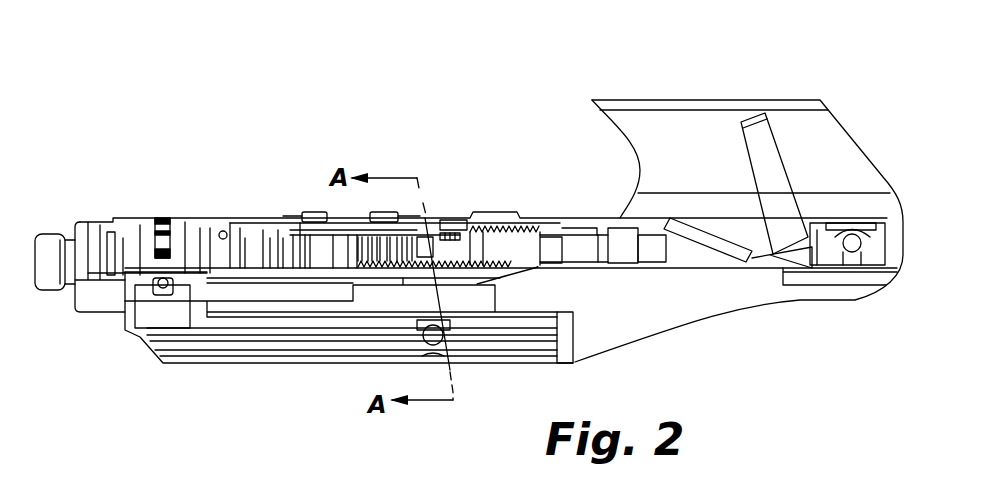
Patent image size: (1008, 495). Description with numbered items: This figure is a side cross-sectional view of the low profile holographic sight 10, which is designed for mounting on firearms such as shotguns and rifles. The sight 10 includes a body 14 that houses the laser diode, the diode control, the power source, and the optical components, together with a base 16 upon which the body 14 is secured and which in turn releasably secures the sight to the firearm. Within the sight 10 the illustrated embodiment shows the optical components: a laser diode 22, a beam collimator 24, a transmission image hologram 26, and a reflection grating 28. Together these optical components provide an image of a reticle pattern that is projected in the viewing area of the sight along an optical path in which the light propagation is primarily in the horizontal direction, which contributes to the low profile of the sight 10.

The holographic sight 10 is at (397, 205).
The body 14 is at (296, 287).
The base 16 is at (827, 153).
The laser diode 22 is at (303, 238).
The beam collimator 24 is at (622, 241).
The transmission image hologram 26 is at (717, 243).
The reflection grating 28 is at (758, 145).